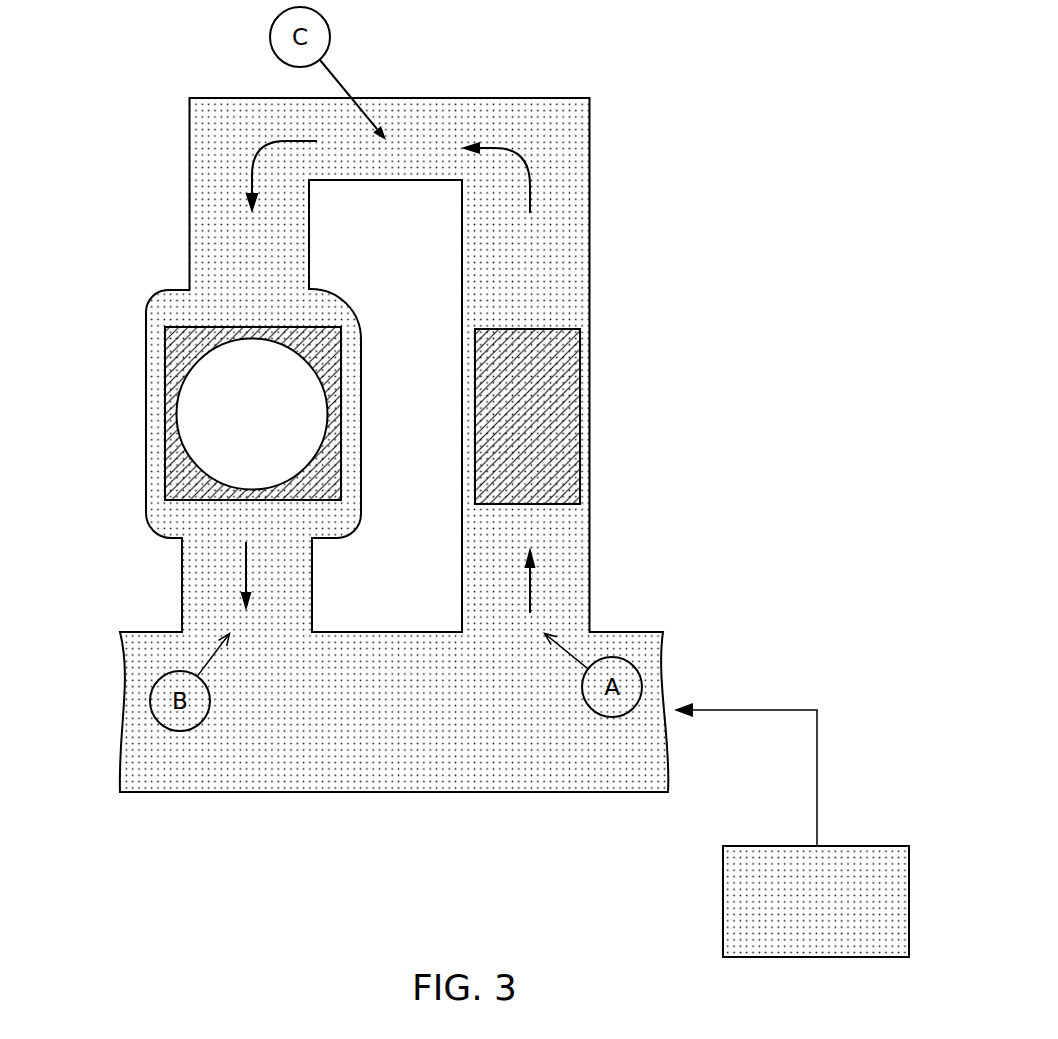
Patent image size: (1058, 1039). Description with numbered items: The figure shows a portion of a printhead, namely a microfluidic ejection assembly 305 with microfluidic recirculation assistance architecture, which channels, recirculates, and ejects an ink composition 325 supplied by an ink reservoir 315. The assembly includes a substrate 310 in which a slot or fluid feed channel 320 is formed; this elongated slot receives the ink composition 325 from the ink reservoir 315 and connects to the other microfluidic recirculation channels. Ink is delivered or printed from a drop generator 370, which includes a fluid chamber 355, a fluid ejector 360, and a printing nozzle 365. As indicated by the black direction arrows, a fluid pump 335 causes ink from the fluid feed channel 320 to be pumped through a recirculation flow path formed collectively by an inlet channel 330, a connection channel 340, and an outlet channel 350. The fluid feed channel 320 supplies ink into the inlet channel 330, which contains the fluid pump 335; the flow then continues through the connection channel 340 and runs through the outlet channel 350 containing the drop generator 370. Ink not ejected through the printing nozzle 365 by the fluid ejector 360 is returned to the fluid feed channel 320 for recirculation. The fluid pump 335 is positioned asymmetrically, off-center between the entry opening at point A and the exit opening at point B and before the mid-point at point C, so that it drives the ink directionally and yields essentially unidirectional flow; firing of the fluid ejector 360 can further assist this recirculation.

The microfluidic ejection assembly 305 is at (385, 437).
The substrate 310 is at (590, 156).
The ink reservoir 315 is at (838, 911).
The fluid feed channel 320 is at (409, 721).
The ink composition 325 is at (480, 748).
The inlet channel 330 is at (565, 243).
The fluid pump 335 is at (557, 419).
The connection channel 340 is at (420, 135).
The outlet channel 350 is at (215, 213).
The fluid chamber 355 is at (323, 310).
The fluid ejector 360 is at (188, 477).
The printing nozzle 365 is at (220, 408).
The drop generator 370 is at (145, 283).